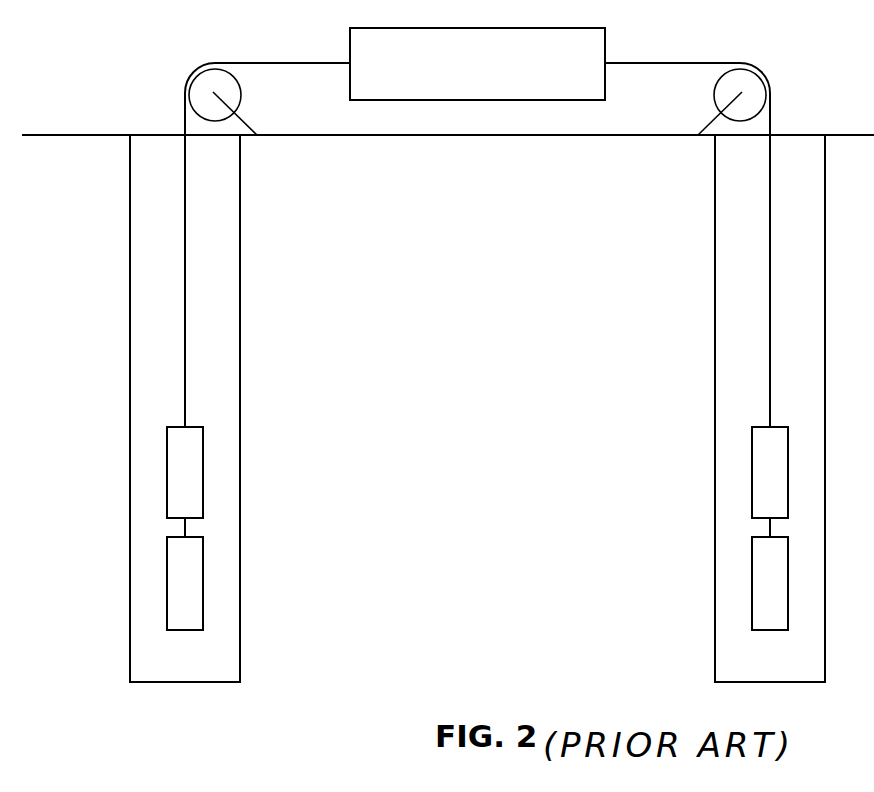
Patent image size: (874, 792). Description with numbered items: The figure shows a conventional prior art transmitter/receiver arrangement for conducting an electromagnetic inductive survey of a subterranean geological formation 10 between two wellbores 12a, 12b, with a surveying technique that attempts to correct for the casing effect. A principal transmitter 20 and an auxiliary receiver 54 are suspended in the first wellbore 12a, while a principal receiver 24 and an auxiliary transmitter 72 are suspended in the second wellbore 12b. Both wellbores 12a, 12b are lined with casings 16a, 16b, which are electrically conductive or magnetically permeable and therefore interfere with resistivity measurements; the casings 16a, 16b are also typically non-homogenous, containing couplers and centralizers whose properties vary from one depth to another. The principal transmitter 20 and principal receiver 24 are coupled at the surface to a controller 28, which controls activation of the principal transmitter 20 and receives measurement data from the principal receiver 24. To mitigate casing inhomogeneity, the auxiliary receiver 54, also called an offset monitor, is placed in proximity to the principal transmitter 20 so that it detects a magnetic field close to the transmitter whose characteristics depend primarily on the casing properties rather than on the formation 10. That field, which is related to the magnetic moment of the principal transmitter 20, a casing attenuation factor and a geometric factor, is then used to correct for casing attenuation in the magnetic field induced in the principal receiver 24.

The geological formation 10 is at (495, 333).
The wellbore 12a is at (202, 227).
The wellbore 12b is at (752, 228).
The casing 16a is at (240, 357).
The casing 16b is at (715, 355).
The principal transmitter 20 is at (171, 481).
The principal receiver 24 is at (756, 481).
The controller 28 is at (463, 74).
The auxiliary receiver 54 is at (171, 596).
The auxiliary transmitter 72 is at (756, 596).